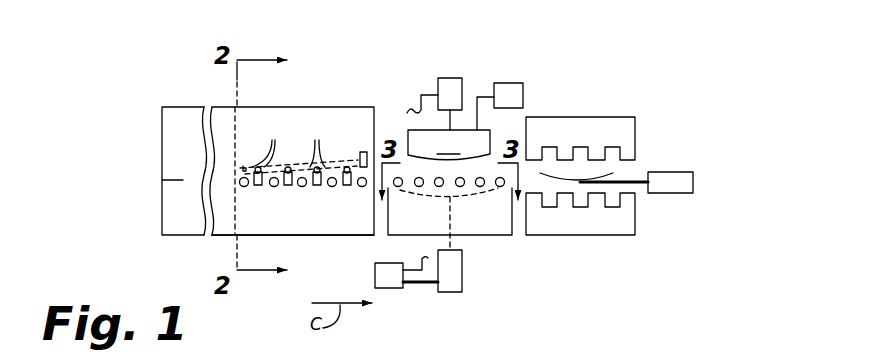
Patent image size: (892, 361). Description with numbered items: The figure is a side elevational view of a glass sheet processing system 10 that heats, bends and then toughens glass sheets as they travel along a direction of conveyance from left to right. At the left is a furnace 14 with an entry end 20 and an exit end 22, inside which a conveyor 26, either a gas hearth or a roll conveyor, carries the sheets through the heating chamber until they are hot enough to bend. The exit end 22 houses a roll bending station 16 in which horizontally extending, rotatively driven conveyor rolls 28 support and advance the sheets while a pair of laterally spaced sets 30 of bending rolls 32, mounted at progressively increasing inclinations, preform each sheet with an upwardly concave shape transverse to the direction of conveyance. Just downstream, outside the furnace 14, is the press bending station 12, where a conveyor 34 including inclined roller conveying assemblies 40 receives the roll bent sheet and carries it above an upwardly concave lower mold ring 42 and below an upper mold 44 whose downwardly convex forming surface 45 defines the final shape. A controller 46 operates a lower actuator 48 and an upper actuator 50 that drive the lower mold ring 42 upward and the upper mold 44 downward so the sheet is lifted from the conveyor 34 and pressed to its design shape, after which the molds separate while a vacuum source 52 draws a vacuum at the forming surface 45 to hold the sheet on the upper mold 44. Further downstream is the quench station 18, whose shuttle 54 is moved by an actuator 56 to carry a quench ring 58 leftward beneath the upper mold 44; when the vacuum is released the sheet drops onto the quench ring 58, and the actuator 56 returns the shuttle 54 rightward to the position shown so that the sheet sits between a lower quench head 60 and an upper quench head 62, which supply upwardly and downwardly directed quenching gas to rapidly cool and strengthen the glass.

The glass sheet processing system 10 is at (479, 99).
The press bending station 12 is at (446, 99).
The furnace 14 is at (165, 139).
The roll bending station 16 is at (293, 156).
The quench station 18 is at (618, 162).
The entry end 20 is at (175, 107).
The exit end 22 is at (333, 237).
The conveyor 26 is at (183, 180).
The conveyor rolls 28 is at (272, 187).
The sets of bending rolls 30 is at (301, 155).
The bending rolls 32 is at (298, 143).
The conveyor 34 is at (470, 226).
The inclined roller conveying assemblies 40 is at (419, 187).
The lower mold ring 42 is at (465, 193).
The upper mold 44 is at (434, 123).
The forming surface 45 is at (448, 144).
The controller 46 is at (375, 273).
The lower actuator 48 is at (453, 273).
The upper actuator 50 is at (449, 80).
The vacuum source 52 is at (505, 83).
The shuttle 54 is at (635, 172).
The shuttle actuator 56 is at (673, 193).
The quench ring 58 is at (617, 160).
The lower quench head 60 is at (598, 235).
The upper quench head 62 is at (615, 123).